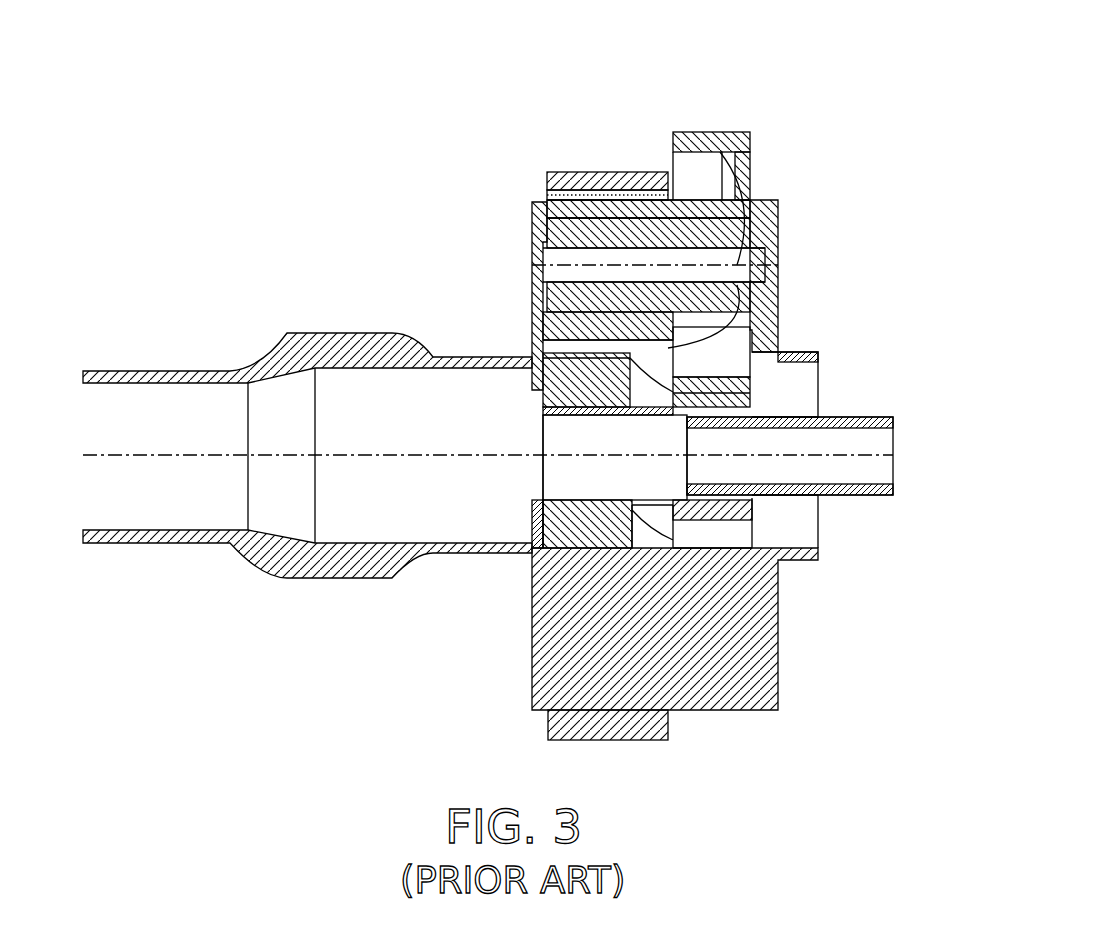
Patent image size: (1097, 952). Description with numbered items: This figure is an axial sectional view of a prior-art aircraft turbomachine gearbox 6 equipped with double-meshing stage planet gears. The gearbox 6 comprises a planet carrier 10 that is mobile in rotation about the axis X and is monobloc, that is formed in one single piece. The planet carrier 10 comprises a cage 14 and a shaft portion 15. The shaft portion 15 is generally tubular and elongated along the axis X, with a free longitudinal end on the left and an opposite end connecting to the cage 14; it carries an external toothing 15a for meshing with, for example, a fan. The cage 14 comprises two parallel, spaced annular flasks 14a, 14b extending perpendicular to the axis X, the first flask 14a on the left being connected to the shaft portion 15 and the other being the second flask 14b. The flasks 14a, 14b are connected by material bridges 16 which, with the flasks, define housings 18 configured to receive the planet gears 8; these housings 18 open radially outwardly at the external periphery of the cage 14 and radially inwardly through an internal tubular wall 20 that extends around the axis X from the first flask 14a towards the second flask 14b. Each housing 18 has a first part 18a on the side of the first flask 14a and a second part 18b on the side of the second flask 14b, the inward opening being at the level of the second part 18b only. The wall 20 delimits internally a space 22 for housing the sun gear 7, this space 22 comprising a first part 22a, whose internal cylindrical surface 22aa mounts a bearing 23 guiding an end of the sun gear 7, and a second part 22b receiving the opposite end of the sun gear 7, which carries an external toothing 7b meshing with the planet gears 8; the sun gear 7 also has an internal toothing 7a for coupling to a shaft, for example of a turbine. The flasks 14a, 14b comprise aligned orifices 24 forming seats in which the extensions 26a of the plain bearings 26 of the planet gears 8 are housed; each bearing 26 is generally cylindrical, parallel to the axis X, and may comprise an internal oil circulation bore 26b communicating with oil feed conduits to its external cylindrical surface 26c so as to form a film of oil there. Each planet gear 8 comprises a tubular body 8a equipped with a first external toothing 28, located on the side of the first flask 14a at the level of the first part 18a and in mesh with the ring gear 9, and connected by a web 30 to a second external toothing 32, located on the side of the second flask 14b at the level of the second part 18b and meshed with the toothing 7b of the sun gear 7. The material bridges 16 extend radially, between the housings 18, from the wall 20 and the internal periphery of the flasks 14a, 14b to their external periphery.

The gearbox 6 is at (830, 117).
The sun gear 7 is at (746, 533).
The internal toothing 7a is at (703, 432).
The external toothing 7b is at (743, 512).
The planet gears 8 is at (728, 125).
The tubular body 8a is at (540, 205).
The ring gear 9 is at (577, 172).
The planet carrier 10 is at (787, 218).
The cage 14 is at (777, 710).
The first flask 14a is at (532, 222).
The second flask 14b is at (785, 312).
The shaft portion 15 is at (190, 533).
The external toothing 15a is at (370, 578).
The material bridges 16 is at (683, 680).
The housings 18 is at (626, 338).
The first part 18a is at (590, 245).
The second part 18b is at (760, 260).
The internal tubular wall 20 is at (538, 295).
The space 22 is at (593, 537).
The first part 22a is at (652, 526).
The bearing member upper portion 22aa is at (545, 383).
The second part 22b is at (708, 533).
The bearing 23 is at (585, 545).
The orifices 24 is at (538, 250).
The plain bearings 26 is at (727, 230).
The extensions 26a is at (535, 278).
The internal oil circulation bore 26b is at (662, 265).
The external cylindrical surface 26c is at (640, 215).
The first external toothing 28 is at (594, 340).
The web 30 is at (740, 165).
The second external toothing 32 is at (745, 162).
The axis X is at (893, 455).